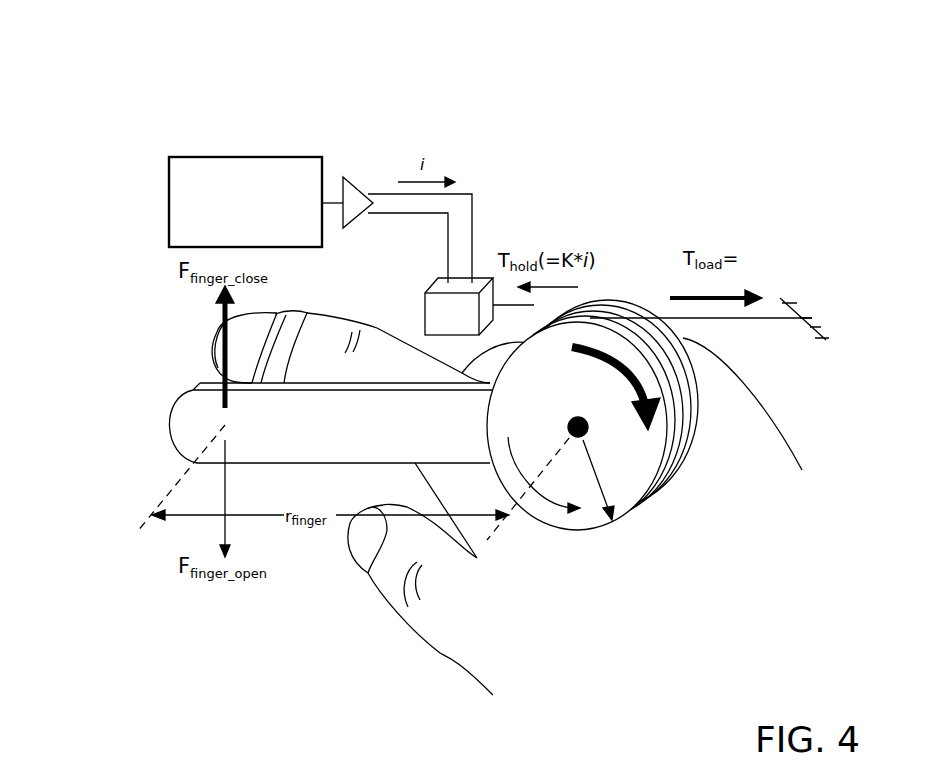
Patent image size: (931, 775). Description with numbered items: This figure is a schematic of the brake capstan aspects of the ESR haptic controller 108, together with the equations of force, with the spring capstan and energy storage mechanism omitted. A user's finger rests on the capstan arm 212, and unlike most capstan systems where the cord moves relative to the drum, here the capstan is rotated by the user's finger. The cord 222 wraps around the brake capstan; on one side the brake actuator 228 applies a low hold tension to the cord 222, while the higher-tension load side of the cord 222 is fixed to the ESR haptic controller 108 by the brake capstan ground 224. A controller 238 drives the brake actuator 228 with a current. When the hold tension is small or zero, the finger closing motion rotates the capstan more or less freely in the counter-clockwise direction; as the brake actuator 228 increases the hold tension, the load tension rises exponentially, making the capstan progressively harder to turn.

The ESR haptic controller 108 is at (195, 100).
The controller 238 is at (263, 228).
The brake actuator 228 is at (583, 242).
The capstan arm 212 is at (360, 454).
The cord 222 is at (732, 318).
The brake capstan ground 224 is at (870, 326).